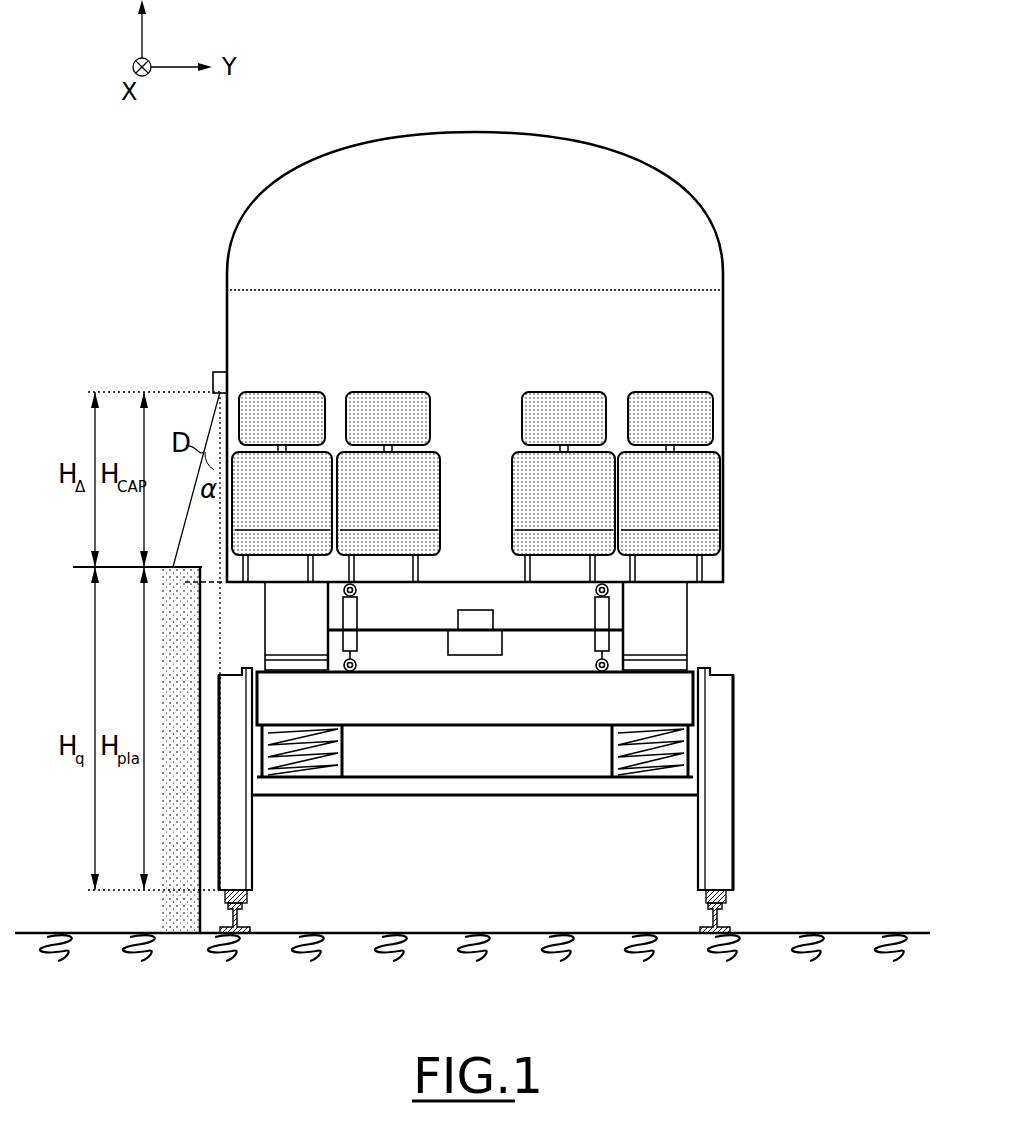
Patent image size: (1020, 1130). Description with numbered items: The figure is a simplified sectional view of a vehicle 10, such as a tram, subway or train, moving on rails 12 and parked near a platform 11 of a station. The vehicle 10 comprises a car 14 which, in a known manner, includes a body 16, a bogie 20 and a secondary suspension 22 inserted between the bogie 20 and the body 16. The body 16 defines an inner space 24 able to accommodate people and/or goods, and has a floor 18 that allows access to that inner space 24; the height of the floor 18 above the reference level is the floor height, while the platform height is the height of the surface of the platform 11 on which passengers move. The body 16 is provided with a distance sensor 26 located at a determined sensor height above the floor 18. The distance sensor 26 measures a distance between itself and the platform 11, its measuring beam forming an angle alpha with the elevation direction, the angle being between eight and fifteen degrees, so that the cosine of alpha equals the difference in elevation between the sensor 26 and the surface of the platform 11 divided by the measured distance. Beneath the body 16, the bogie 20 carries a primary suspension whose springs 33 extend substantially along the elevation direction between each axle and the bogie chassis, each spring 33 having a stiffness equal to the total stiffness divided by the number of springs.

The vehicle 10 is at (785, 573).
The platform 11 is at (81, 565).
The rails 12 is at (241, 915).
The car 14 is at (592, 104).
The body 16 is at (412, 134).
The floor 18 is at (562, 584).
The bogie 20 is at (750, 825).
The secondary suspension 22 is at (715, 615).
The inner space 24 is at (640, 350).
The distance sensor 26 is at (213, 380).
The spring 33 is at (610, 752).